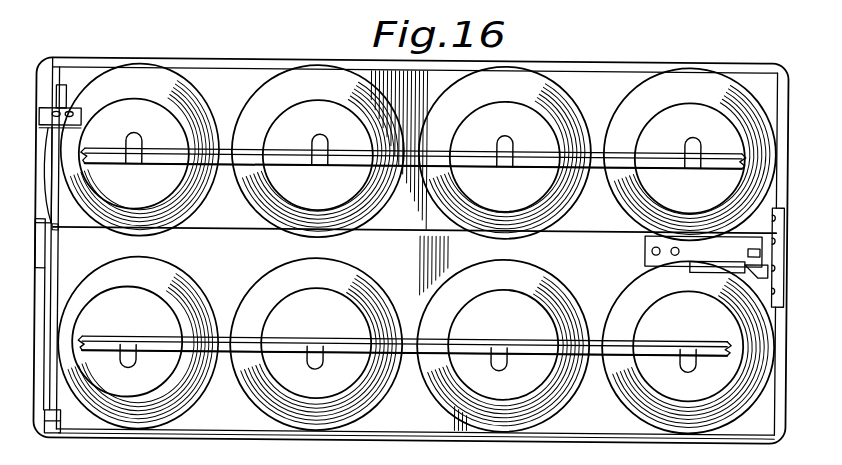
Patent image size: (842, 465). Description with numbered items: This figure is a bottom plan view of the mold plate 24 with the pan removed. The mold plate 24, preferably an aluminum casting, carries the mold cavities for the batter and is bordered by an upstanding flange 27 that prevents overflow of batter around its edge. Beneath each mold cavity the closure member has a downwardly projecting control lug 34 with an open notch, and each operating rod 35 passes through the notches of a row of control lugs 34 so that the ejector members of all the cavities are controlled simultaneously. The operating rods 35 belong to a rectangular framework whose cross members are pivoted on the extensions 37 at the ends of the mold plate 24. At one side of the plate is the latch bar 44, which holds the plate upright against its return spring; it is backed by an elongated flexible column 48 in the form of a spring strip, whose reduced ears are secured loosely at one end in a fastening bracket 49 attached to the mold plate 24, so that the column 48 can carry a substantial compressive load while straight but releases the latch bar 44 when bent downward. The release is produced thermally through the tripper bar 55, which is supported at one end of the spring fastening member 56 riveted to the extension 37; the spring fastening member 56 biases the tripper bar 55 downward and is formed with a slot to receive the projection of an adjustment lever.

The mold plate 24 is at (222, 420).
The upstanding flange 27 is at (418, 433).
The control lug 34 is at (143, 128).
The operating rod 35 is at (229, 151).
The extension 37 is at (785, 268).
The latch bar 44 is at (78, 111).
The flexible column 48 is at (59, 258).
The fastening bracket 49 is at (51, 436).
The tripper bar 55 is at (218, 232).
The spring fastening member 56 is at (757, 276).